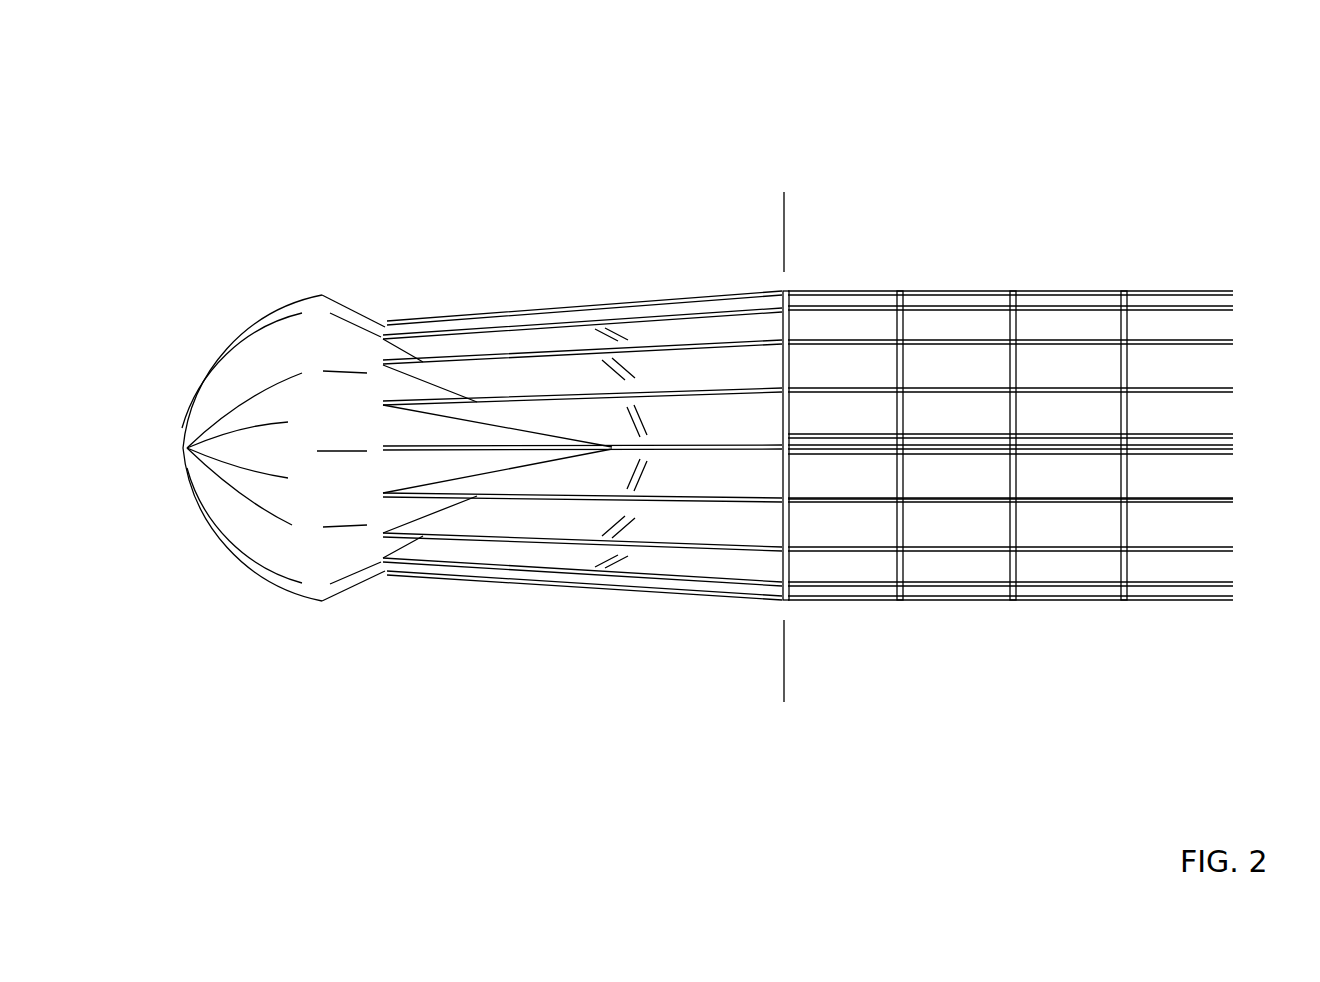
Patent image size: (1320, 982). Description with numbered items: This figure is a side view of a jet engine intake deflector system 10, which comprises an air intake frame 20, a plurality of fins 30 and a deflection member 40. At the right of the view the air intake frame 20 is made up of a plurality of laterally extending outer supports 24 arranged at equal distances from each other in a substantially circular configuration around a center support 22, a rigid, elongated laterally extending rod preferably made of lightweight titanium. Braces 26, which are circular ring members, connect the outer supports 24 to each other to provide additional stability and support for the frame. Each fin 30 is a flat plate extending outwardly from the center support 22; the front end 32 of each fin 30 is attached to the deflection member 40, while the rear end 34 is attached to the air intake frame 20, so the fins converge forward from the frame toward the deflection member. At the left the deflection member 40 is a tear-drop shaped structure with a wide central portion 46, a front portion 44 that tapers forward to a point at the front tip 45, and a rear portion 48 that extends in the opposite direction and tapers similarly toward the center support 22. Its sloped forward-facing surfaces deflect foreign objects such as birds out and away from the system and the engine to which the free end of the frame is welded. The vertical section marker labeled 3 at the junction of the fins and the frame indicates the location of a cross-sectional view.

The jet engine intake deflector system 10 is at (222, 106).
The air intake frame 20 is at (961, 246).
The center support 22 is at (1213, 434).
The outer supports 24 is at (950, 502).
The braces 26 is at (1125, 557).
The fins 30 is at (534, 254).
The front end 32 is at (387, 323).
The rear end 34 is at (772, 537).
The deflection member 40 is at (227, 318).
The front portion 44 is at (181, 427).
The front tip 45 is at (170, 452).
The central portion 46 is at (317, 590).
The rear portion 48 is at (590, 452).
The section line 3- 3 is at (760, 662).